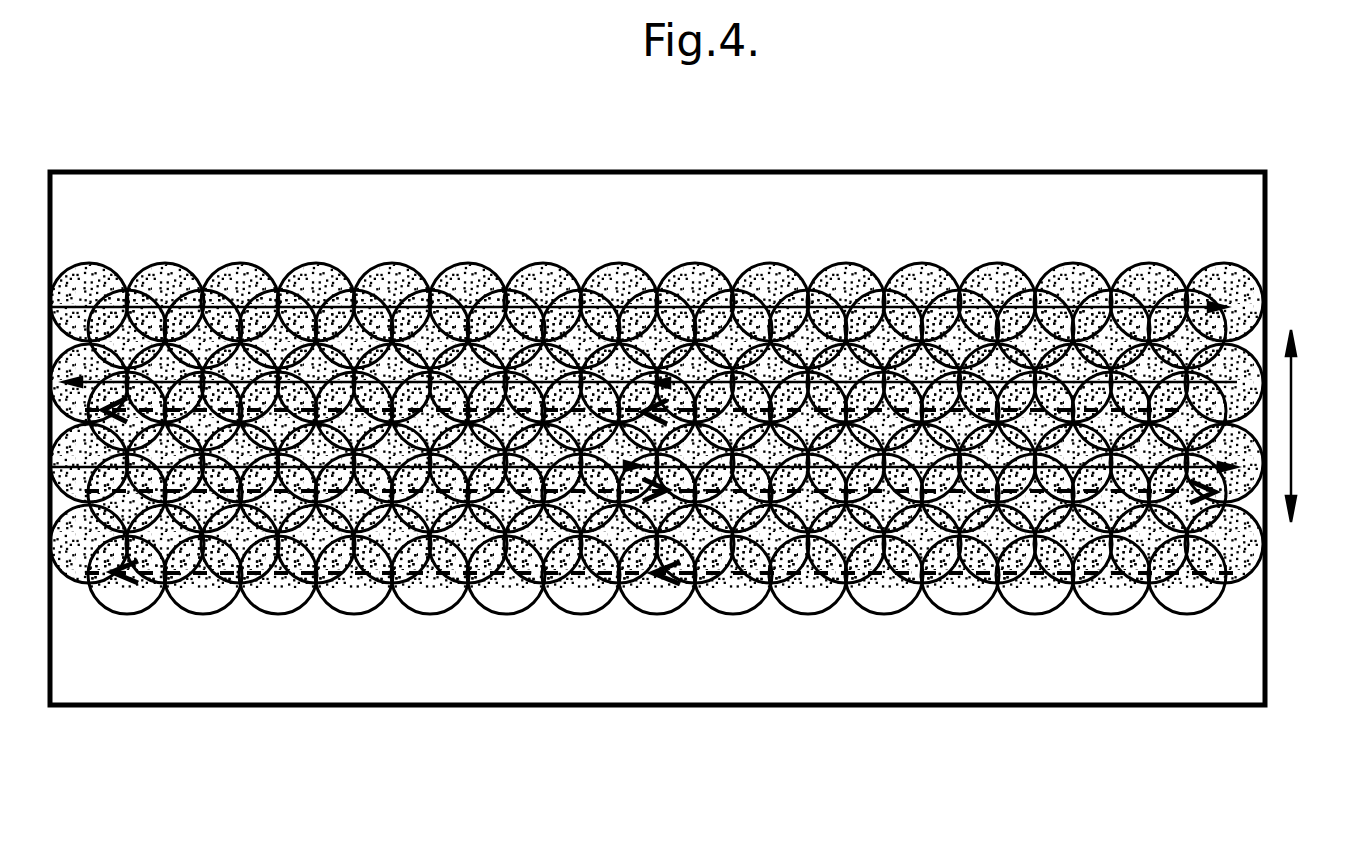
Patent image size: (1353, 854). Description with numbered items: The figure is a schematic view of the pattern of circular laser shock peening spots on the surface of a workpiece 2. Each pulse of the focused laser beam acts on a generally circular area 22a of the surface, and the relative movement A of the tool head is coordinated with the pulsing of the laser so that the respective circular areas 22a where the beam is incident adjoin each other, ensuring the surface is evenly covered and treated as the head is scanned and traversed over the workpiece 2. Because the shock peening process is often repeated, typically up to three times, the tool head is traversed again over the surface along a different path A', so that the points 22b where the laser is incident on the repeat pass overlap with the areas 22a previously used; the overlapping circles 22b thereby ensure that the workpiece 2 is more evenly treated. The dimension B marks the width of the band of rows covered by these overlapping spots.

The workpiece 2 is at (1002, 174).
The circular areas of first laser pass 22a is at (311, 265).
The circular areas of repeated laser pass 22b is at (898, 612).
The relative movement of tool head A is at (644, 282).
The different path of tool head on repeat A' is at (662, 594).
The scan band width B is at (1311, 426).